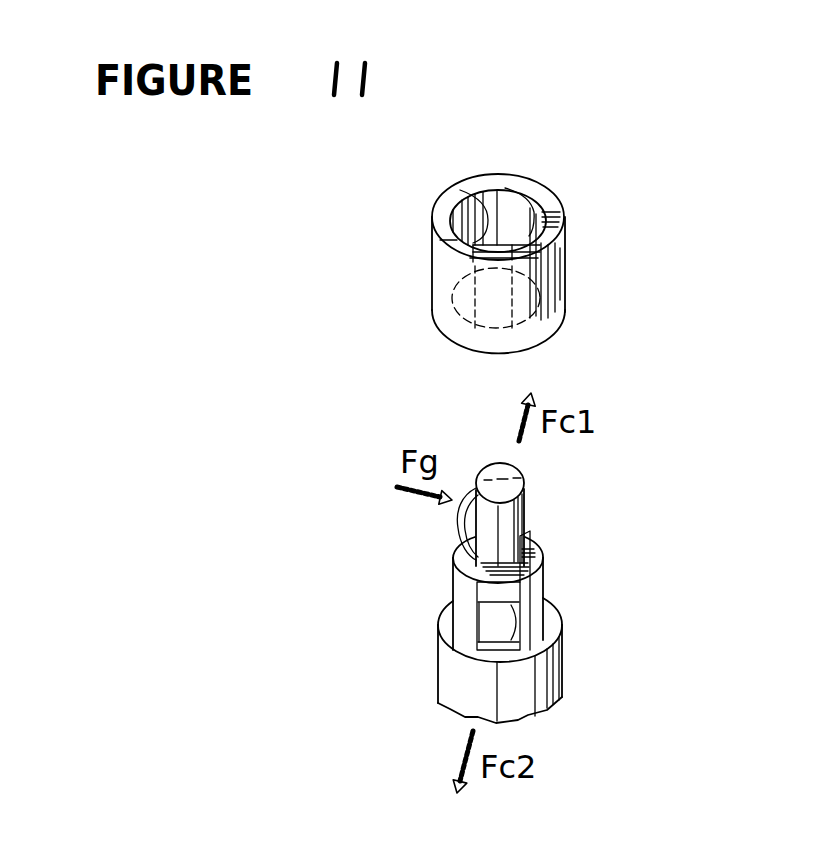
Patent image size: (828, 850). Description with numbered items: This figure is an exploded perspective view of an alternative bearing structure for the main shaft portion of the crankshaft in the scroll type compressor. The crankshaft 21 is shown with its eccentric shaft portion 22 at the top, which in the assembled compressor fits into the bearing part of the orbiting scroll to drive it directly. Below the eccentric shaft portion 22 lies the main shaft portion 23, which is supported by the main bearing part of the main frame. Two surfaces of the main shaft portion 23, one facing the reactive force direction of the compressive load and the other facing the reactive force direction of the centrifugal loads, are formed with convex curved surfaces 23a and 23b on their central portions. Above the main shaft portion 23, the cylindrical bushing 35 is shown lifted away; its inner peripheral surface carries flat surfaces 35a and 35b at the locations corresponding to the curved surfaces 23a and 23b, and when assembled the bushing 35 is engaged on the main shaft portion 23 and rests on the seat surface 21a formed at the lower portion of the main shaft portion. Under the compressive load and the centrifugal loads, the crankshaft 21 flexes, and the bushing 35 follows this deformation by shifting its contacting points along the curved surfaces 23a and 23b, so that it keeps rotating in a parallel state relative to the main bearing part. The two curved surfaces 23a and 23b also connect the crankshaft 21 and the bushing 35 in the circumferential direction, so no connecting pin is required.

The crankshaft 21 is at (560, 682).
The seat surface 21a is at (543, 628).
The eccentric shaft portion 22 is at (523, 480).
The main shaft portion 23 is at (572, 592).
The curved surface 23a is at (487, 623).
The curved surface 23b is at (537, 560).
The cylindrical bushing 35 is at (552, 205).
The flat surface 35a is at (460, 190).
The flat surface 35b is at (505, 188).